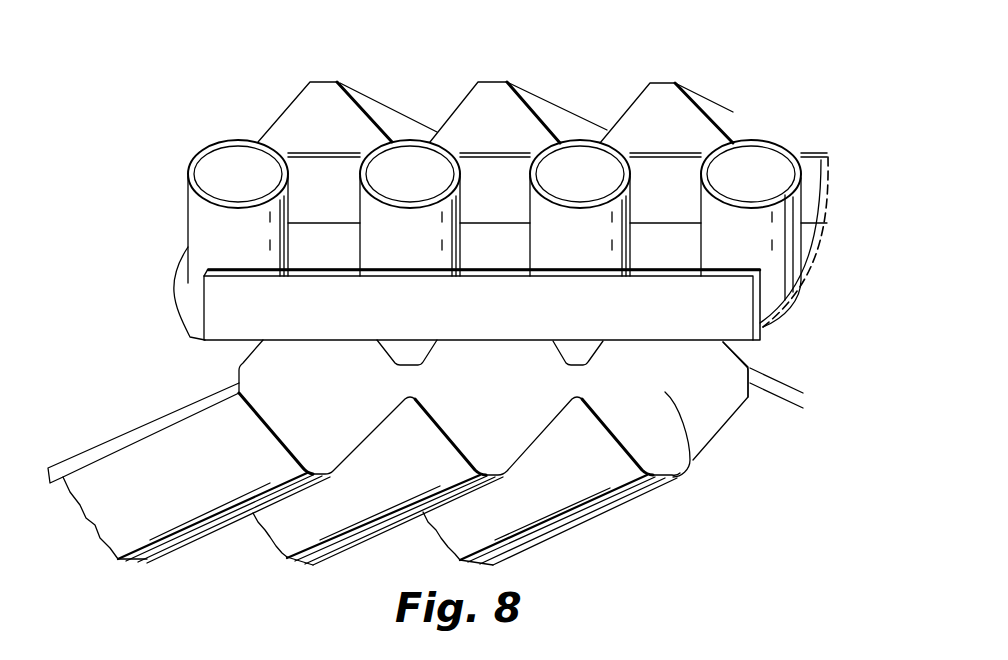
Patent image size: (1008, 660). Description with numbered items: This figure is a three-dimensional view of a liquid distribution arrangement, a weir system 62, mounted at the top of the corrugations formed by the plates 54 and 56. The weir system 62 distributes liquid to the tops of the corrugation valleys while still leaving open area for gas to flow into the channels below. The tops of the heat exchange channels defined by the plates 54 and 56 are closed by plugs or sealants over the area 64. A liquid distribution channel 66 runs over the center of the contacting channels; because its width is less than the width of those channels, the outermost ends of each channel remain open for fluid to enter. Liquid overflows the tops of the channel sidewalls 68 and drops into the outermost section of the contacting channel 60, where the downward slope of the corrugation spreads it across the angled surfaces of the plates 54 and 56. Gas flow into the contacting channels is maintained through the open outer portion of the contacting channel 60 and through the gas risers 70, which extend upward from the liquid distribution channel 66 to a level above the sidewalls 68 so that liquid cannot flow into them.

The plate 54 is at (728, 418).
The plate 56 is at (757, 123).
The contacting channel 60 is at (590, 350).
The weir system 62 is at (526, 204).
The area 64 is at (425, 453).
The liquid distribution channel 66 is at (820, 193).
The channel sidewalls 68 is at (735, 300).
The gas risers 70 is at (782, 245).